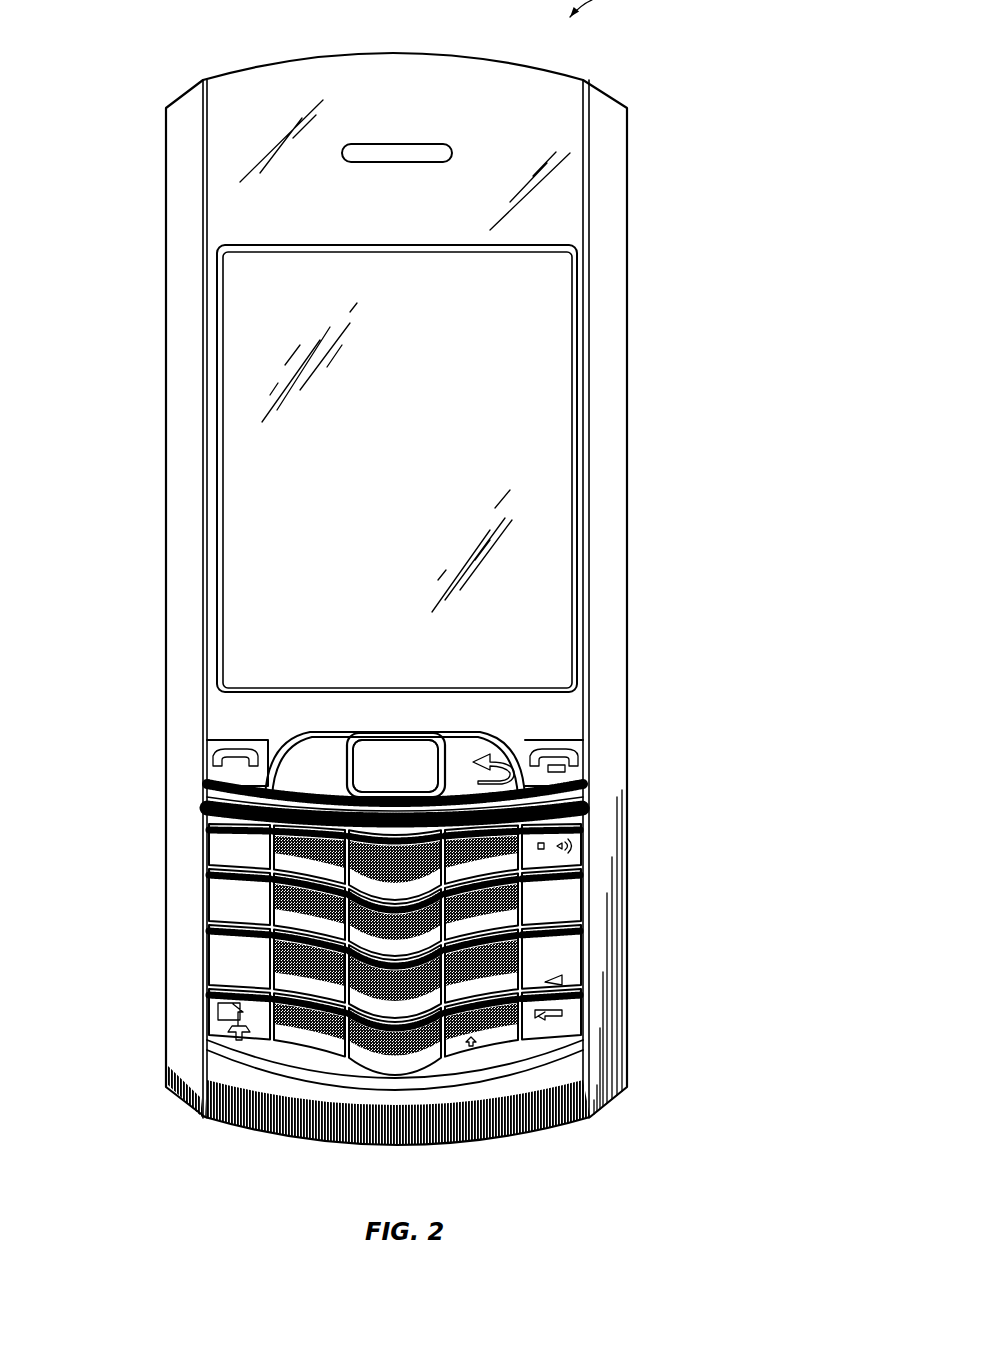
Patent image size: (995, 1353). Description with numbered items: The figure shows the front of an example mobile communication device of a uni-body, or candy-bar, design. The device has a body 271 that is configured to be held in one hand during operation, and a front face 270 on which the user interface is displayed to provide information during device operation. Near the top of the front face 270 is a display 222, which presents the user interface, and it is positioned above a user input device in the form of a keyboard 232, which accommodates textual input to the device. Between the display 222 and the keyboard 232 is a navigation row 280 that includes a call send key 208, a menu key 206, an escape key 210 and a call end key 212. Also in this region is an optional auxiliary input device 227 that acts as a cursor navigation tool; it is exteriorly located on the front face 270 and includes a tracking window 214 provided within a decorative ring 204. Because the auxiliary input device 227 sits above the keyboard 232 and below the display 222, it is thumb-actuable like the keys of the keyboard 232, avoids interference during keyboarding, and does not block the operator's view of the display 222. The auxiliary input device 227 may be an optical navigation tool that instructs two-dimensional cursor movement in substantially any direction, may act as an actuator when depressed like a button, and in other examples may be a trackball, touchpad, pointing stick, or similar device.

The decorative ring 204 is at (395, 738).
The menu key 206 is at (313, 750).
The call send key 208 is at (237, 743).
The escape key 210 is at (477, 745).
The call end key 212 is at (553, 743).
The tracking window 214 is at (395, 762).
The display 222 is at (257, 310).
The auxiliary input device 227 is at (380, 765).
The keyboard 232 is at (400, 1097).
The front face 270 is at (613, 139).
The body 271 is at (158, 126).
The navigation row 280 is at (198, 782).